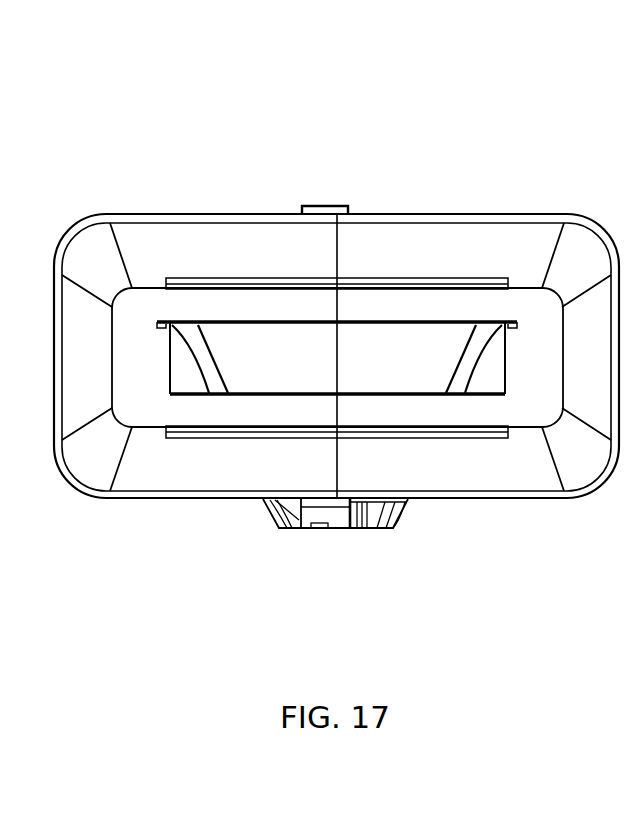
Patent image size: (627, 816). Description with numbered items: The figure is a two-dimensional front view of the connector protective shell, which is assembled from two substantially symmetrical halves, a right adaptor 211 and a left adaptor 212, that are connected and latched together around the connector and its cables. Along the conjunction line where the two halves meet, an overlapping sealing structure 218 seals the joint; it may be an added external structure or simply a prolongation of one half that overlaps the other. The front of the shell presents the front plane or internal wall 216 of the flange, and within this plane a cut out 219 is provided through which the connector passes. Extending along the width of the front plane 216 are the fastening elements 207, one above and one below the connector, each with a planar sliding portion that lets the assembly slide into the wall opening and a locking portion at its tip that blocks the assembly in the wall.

The fastening element 207 is at (257, 437).
The right adaptor half 211 is at (493, 214).
The left adaptor half 212 is at (145, 213).
The front plane or internal wall 216 is at (145, 380).
The overlapping sealing structure 218 is at (325, 196).
The cut out 219 is at (422, 353).